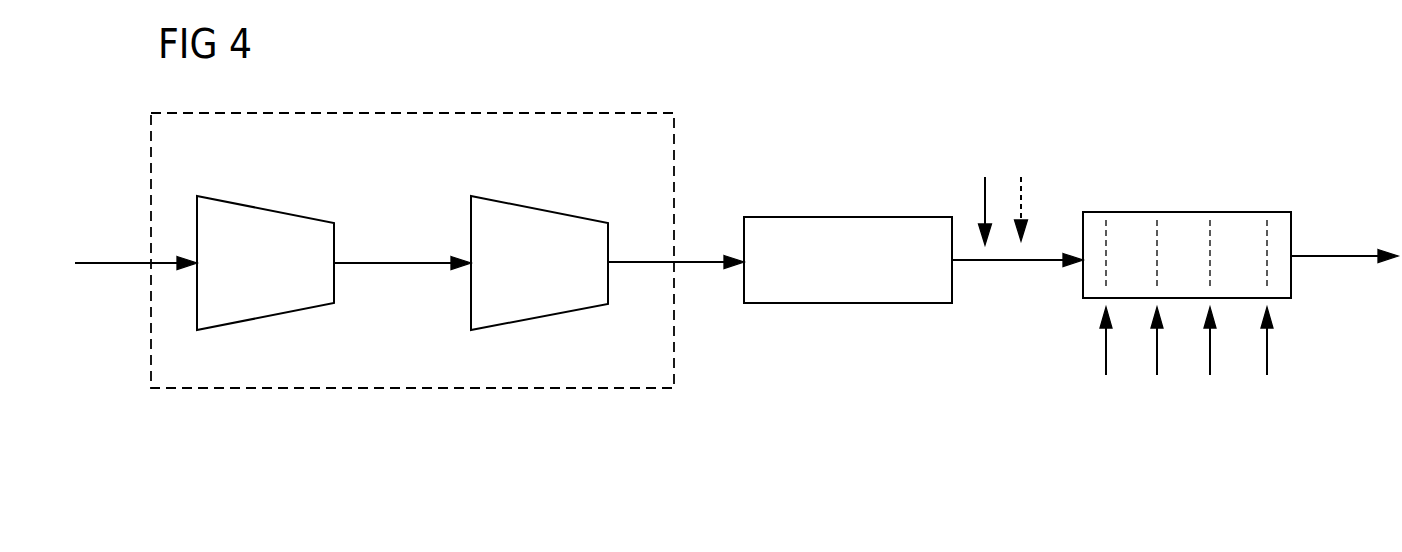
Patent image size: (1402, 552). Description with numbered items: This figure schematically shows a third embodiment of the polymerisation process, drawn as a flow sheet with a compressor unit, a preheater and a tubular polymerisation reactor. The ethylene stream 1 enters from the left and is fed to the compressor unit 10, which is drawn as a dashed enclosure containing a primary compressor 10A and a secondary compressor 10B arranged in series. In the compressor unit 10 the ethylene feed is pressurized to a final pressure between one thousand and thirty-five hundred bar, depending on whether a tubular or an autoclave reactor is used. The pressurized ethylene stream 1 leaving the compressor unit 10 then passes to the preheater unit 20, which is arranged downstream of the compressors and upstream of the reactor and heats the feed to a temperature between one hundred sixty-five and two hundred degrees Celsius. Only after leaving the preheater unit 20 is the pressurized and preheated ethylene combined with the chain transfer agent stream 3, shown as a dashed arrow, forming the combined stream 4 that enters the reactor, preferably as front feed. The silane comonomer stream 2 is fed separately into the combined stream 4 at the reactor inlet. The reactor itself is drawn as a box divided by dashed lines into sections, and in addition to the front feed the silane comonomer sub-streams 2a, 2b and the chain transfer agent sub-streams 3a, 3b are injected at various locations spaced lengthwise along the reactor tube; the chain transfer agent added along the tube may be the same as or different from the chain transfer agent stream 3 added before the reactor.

The ethylene stream 1 is at (409, 245).
The compressor unit 10 is at (447, 112).
The primary compressor 10A is at (250, 206).
The secondary compressor 10B is at (529, 207).
The preheater unit 20 is at (839, 222).
The silane comonomer stream 2 is at (985, 197).
The chain transfer agent stream 3 is at (1021, 195).
The combined stream 4 is at (1017, 245).
The silane comonomer sub-stream 2a is at (1105, 358).
The chain transfer agent sub-stream 3a is at (1160, 357).
The silane comonomer sub-stream 2b is at (1216, 358).
The chain transfer agent sub-stream 3b is at (1269, 357).